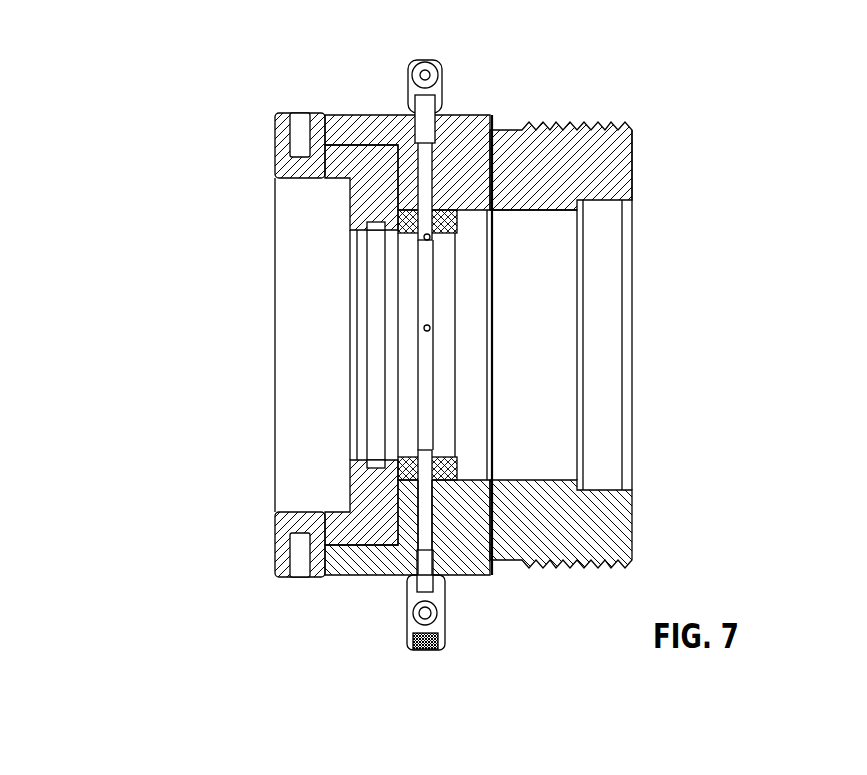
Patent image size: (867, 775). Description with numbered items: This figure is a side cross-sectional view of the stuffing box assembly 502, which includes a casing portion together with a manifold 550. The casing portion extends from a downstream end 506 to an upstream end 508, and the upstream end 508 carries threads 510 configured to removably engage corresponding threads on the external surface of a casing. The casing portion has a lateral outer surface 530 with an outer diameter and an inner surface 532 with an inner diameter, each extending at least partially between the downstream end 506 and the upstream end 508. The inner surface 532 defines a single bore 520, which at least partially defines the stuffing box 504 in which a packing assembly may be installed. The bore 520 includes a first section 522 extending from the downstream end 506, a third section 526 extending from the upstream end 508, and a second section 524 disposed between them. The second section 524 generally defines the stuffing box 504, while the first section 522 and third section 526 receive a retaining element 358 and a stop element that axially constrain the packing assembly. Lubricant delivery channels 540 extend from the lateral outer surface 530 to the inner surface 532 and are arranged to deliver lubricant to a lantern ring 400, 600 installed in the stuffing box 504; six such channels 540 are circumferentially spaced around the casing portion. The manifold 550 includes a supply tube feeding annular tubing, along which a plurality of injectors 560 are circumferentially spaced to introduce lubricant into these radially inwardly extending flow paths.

The stuffing box assembly 502 is at (195, 90).
The downstream end 506 is at (405, 180).
The lateral outer surface 530 is at (468, 112).
The threads 510 is at (574, 126).
The retaining element 358 is at (288, 165).
The upstream end 508 is at (638, 183).
The inner surface 532 is at (542, 214).
The stuffing box 504 is at (508, 234).
The bore 520 is at (613, 302).
The third section 526 is at (620, 367).
The second section 524 is at (533, 398).
The first section 522 is at (357, 320).
The lantern ring 400 is at (398, 272).
The lantern ring 600 is at (235, 345).
The lubricant delivery channels 540 is at (428, 517).
The injectors 560 is at (432, 540).
The manifold 550 is at (408, 621).